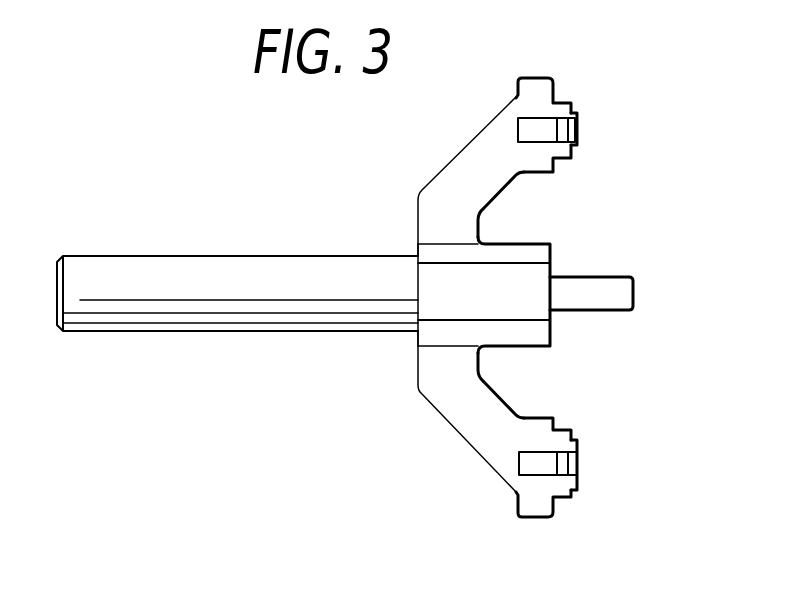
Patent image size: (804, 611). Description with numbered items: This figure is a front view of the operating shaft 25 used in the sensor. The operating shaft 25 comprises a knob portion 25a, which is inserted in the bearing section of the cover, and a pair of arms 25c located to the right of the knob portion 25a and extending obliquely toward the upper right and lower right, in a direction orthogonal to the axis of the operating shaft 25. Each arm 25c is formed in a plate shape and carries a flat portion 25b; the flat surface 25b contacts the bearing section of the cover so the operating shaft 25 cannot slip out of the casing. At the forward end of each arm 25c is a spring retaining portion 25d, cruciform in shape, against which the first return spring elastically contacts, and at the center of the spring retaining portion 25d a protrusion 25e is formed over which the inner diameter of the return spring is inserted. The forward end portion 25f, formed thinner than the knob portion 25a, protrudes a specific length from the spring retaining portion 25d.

The operating shaft 25 is at (214, 350).
The knob portion 25a is at (182, 273).
The flat portion 25b is at (417, 218).
The arm 25c is at (460, 178).
The spring retaining portion 25d is at (532, 128).
The protrusion 25e is at (577, 113).
The forward end portion 25f is at (622, 292).